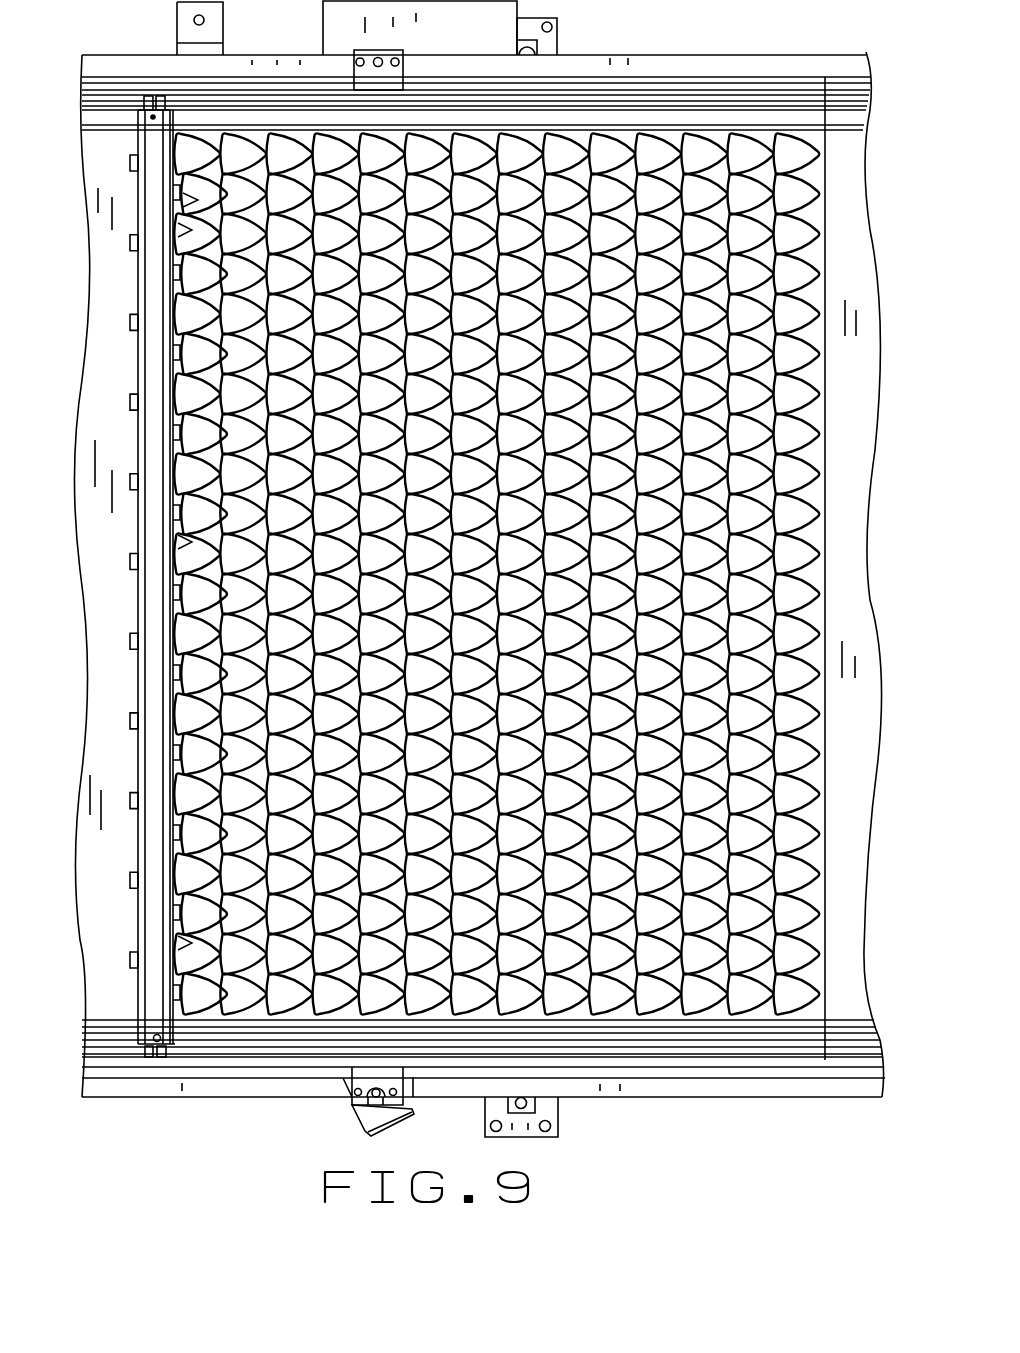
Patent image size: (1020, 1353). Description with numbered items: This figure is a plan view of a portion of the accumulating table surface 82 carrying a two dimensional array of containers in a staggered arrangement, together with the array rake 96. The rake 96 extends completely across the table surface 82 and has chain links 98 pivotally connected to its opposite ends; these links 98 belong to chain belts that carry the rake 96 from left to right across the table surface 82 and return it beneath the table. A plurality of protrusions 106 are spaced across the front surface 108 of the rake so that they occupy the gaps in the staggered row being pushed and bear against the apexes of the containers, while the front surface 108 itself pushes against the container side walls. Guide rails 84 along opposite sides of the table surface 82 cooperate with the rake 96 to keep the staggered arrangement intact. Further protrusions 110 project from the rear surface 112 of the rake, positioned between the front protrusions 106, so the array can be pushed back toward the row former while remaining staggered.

The accumulating table surface 82 is at (108, 770).
The guide rails 84 is at (110, 130).
The array rake 96 is at (153, 440).
The chain links 98 is at (155, 96).
The protrusions 106 is at (173, 207).
The front surface 108 is at (172, 227).
The protrusions 110 is at (130, 160).
The rear surface 112 is at (138, 273).